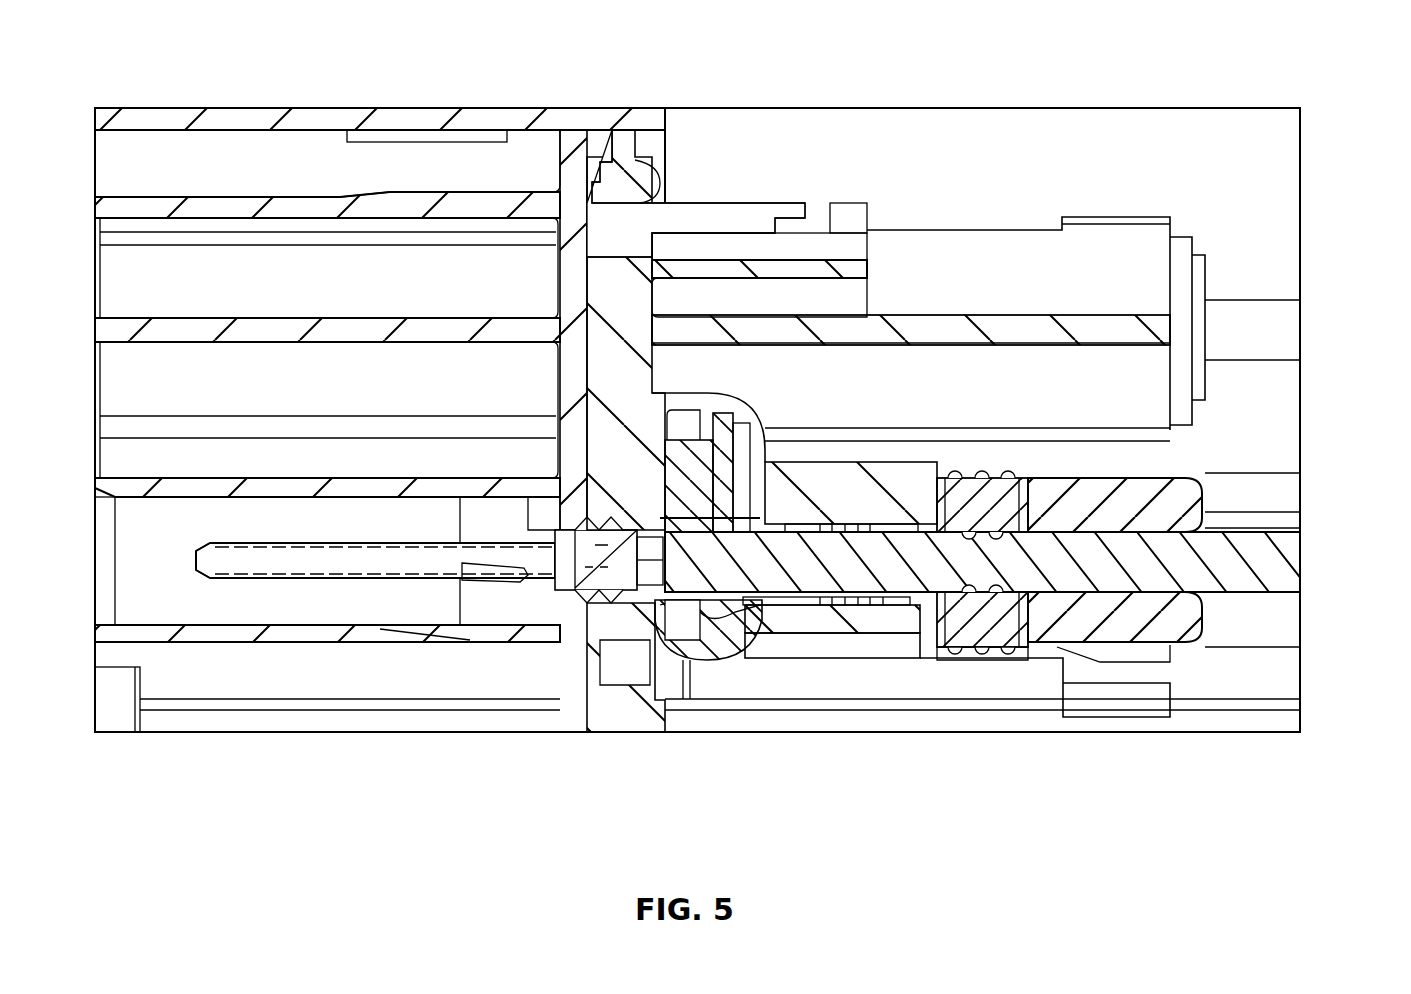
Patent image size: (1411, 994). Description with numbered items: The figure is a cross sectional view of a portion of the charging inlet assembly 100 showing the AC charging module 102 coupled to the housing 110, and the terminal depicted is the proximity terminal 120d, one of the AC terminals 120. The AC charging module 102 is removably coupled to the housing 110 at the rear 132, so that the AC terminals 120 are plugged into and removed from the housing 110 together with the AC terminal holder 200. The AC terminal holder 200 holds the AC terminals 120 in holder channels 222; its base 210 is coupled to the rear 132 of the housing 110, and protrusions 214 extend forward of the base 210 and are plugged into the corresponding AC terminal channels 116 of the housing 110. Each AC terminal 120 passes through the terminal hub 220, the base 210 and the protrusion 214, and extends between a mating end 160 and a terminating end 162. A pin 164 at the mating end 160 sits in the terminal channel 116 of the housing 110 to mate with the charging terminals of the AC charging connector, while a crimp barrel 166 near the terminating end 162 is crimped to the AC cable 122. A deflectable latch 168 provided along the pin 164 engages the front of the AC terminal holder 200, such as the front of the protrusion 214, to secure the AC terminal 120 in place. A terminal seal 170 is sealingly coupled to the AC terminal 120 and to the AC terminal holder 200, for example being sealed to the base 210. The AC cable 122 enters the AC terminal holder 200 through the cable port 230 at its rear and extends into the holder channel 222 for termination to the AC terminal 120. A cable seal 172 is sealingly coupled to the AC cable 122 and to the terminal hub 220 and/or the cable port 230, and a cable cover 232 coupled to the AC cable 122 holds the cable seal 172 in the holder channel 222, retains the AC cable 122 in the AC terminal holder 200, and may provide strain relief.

The charging inlet assembly 100 is at (802, 132).
The AC charging module 102 is at (1018, 215).
The housing 110 is at (430, 122).
The AC terminal channel 116 is at (203, 597).
The AC terminal 120 is at (235, 537).
The proximity terminal 120d is at (360, 580).
The AC cable 122 is at (1284, 560).
The rear 132 is at (597, 238).
The mating end 160 is at (243, 585).
The terminating end 162 is at (858, 604).
The pin 164 is at (420, 580).
The crimp barrel 166 is at (762, 600).
The latch 168 is at (515, 590).
The terminal seal 170 is at (625, 605).
The cable seal 172 is at (957, 622).
The AC terminal holder 200 is at (917, 253).
The base 210 is at (640, 185).
The protrusion 214 is at (548, 596).
The terminal hub 220 is at (873, 490).
The holder channel 222 is at (628, 612).
The cable port 230 is at (1095, 476).
The cable cover 232 is at (1200, 500).